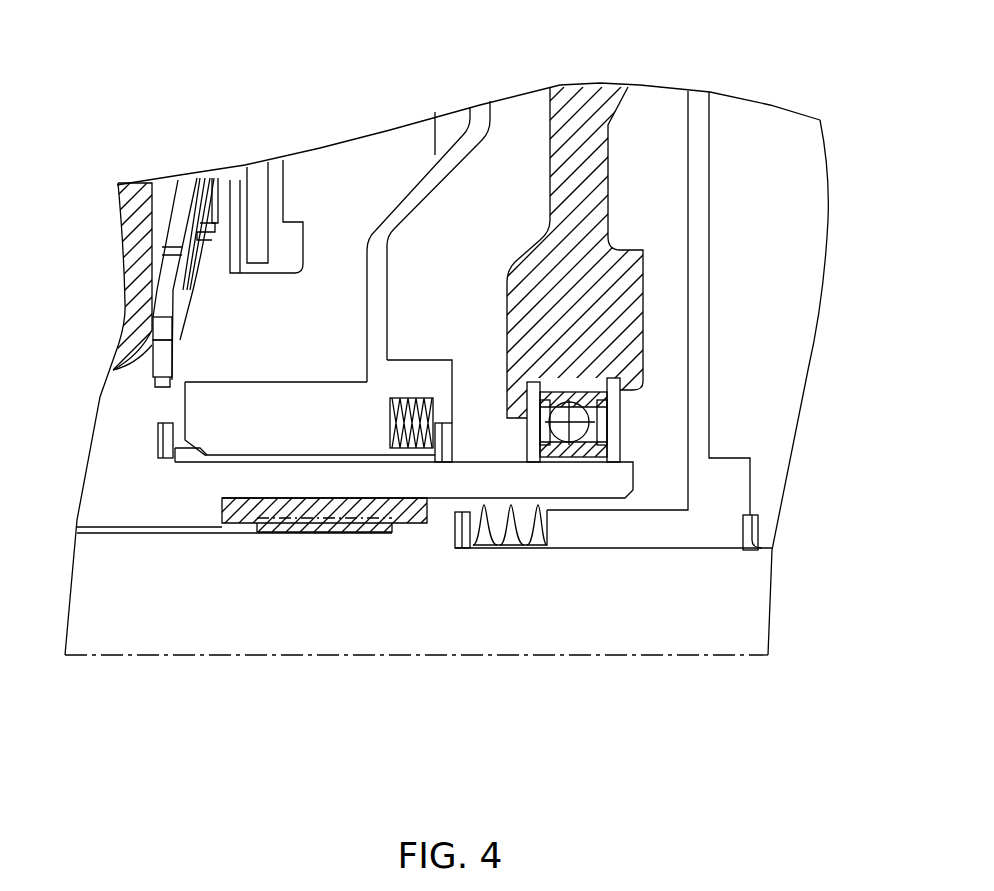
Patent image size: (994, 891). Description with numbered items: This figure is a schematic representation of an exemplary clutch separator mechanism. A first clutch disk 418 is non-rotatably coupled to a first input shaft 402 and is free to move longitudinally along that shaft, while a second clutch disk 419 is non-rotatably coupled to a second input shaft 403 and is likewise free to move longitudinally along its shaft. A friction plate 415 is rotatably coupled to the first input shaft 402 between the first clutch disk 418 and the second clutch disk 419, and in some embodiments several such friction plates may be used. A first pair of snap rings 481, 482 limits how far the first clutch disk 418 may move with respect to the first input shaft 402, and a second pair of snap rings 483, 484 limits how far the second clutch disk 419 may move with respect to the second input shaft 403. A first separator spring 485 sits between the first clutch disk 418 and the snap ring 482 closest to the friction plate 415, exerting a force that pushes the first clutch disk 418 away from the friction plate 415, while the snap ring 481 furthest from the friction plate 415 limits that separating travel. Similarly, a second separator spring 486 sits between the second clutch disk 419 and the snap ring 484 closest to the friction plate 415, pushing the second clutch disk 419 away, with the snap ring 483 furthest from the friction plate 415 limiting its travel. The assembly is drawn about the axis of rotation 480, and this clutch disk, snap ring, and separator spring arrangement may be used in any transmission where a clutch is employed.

The first input shaft 402 is at (93, 480).
The second input shaft 403 is at (80, 583).
The friction plate 415 is at (582, 104).
The first clutch disk 418 is at (480, 106).
The second clutch disk 419 is at (697, 106).
The axis of rotation 480 is at (370, 652).
The snap ring 481 is at (175, 463).
The snap ring 482 is at (448, 440).
The snap ring 483 is at (772, 550).
The snap ring 484 is at (457, 550).
The first separator spring 485 is at (415, 398).
The second separator spring 486 is at (520, 535).